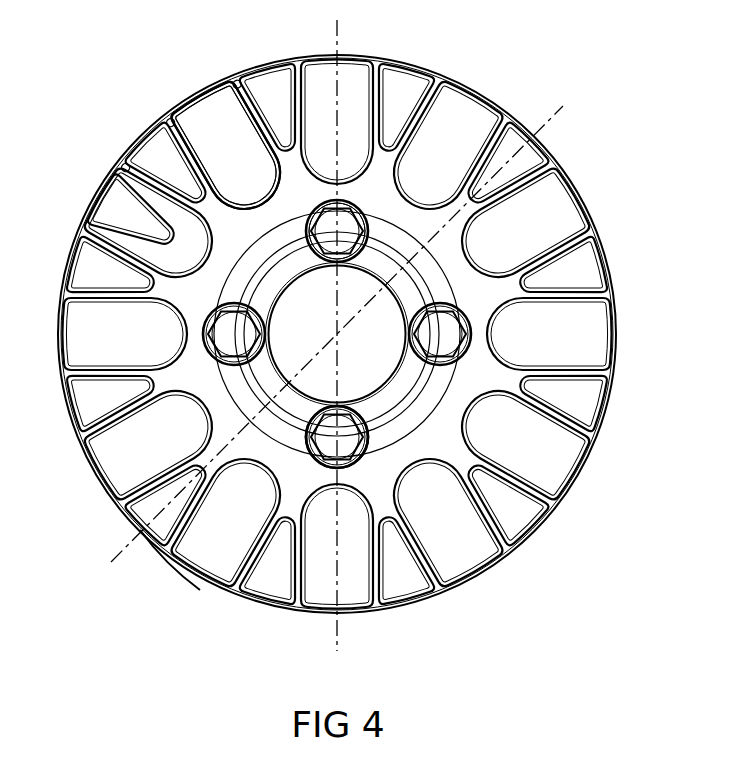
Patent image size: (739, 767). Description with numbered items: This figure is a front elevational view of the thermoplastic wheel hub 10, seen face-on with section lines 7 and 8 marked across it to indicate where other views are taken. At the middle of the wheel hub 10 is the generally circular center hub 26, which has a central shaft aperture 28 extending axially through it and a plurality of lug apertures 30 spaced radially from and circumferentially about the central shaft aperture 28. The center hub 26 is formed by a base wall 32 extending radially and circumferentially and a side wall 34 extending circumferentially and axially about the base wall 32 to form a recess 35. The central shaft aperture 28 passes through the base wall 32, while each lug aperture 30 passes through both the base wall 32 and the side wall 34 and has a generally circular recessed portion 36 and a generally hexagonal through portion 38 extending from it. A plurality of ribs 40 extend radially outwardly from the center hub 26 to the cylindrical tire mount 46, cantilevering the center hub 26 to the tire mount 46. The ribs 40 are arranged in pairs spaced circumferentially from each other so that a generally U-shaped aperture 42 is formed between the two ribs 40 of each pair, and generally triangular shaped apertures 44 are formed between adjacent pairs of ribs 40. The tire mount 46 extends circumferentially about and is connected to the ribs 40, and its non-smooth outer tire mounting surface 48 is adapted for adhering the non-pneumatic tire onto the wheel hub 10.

The section line 7- 7 is at (301, 651).
The section line 8- 8 is at (89, 540).
The thermoplastic wheel hub 10 is at (609, 112).
The center hub 26 is at (192, 298).
The central shaft aperture 28 is at (278, 362).
The lug apertures 30 is at (330, 240).
The base wall 32 is at (408, 402).
The side wall 34 is at (413, 410).
The recess 35 is at (408, 373).
The recessed portion 36 is at (346, 250).
The through portion 38 is at (325, 427).
The ribs 40 is at (237, 93).
The U-shaped aperture 42 is at (190, 150).
The triangular shaped apertures 44 is at (138, 146).
The tire mount 46 is at (552, 153).
The non-smooth outer tire mounting surface 48 is at (162, 552).